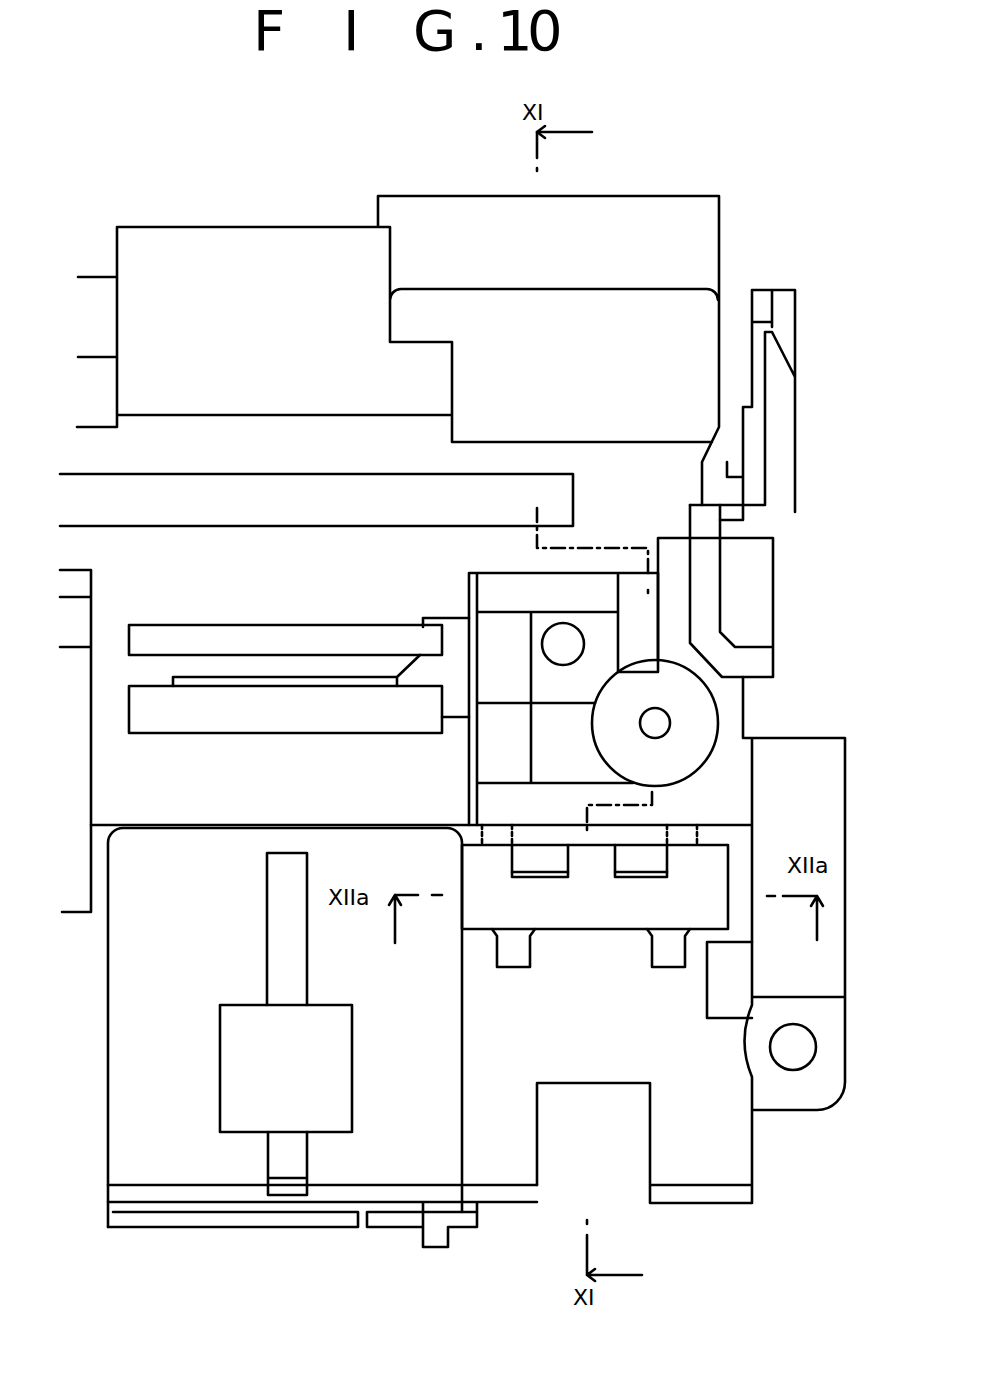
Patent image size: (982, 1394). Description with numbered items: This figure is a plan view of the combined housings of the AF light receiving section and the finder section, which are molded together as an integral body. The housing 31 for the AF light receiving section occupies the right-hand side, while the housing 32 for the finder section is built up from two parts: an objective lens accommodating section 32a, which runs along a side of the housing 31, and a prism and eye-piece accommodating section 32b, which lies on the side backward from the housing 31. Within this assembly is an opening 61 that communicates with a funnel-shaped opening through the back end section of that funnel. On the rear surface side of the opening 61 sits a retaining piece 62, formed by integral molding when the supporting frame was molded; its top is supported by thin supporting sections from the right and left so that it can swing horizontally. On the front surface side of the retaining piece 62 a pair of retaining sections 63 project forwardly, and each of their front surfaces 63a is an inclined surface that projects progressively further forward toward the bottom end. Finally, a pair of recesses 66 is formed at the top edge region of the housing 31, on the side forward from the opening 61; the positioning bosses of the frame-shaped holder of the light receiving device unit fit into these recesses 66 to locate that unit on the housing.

The housing for the AF light receiving section 31 is at (714, 1236).
The housing for the finder section 32 is at (300, 791).
The objective lens accommodating section 32a is at (271, 1258).
The prism and eye-piece accommodating section 32b is at (348, 158).
The opening 61 is at (708, 877).
The retaining piece 62 is at (591, 895).
The retaining sections 63 is at (520, 860).
The front surfaces of the retaining sections 63a is at (635, 877).
The recesses 66 is at (518, 958).